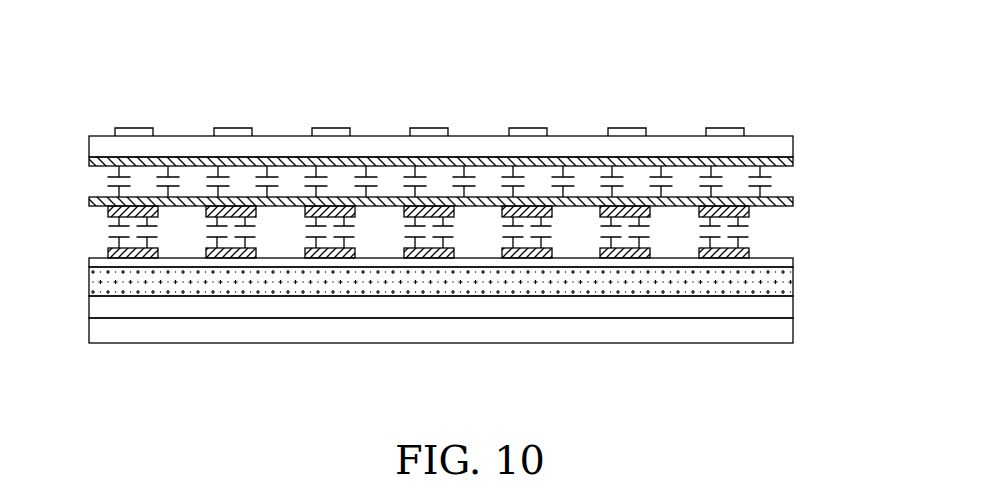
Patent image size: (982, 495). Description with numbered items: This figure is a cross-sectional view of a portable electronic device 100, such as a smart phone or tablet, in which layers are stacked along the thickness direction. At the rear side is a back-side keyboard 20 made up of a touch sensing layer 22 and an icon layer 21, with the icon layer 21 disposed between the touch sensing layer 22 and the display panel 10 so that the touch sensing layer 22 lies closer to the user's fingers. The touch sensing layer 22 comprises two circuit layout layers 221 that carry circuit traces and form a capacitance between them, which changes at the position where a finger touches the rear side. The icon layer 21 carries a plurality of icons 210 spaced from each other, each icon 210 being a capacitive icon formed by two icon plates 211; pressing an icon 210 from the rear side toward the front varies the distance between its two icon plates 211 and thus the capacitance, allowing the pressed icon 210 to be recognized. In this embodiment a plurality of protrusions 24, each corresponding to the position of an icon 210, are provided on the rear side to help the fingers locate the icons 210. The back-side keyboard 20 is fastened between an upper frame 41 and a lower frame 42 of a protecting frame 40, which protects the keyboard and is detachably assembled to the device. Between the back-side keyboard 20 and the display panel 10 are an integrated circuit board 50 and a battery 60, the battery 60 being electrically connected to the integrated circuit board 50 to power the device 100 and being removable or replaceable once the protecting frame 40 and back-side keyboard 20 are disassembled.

The portable electronic device 100 is at (436, 75).
The back-side keyboard 20 is at (70, 154).
The electrode pads 24 is at (330, 134).
The touch sensing layer 22 is at (84, 157).
The circuit layout layers 221 is at (790, 162).
The icon layer 21 is at (84, 208).
The icon plates 211 is at (750, 212).
The icon 210 is at (308, 233).
The protecting frame 40 is at (708, 84).
The upper frame 41 is at (688, 147).
The lower frame 42 is at (580, 262).
The battery 60 is at (556, 282).
The integrated circuit board 50 is at (635, 305).
The display panel 10 is at (710, 328).